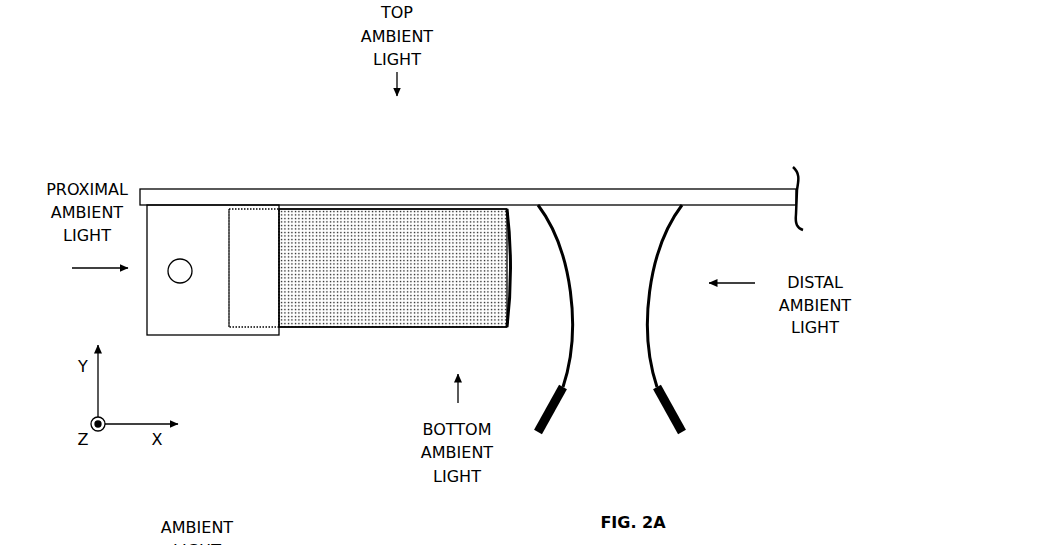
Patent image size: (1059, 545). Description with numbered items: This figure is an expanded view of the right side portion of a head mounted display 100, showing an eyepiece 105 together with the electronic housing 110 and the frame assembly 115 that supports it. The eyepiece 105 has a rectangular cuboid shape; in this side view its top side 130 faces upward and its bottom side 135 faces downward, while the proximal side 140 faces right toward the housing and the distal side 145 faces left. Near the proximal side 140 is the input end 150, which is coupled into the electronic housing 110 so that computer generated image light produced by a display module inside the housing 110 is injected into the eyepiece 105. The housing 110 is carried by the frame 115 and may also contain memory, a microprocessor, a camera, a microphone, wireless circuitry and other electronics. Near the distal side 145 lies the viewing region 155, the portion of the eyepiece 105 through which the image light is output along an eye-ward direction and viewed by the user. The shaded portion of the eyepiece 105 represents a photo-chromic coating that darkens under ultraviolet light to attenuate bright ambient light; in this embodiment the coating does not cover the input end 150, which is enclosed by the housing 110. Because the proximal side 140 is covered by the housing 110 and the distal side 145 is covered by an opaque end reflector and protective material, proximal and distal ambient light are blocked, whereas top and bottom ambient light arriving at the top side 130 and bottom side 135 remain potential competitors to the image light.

The head mounted display 100 is at (684, 80).
The eyepiece 105 is at (397, 267).
The electronic housing 110 is at (188, 326).
The frame assembly 115 is at (752, 189).
The top side 130 is at (356, 207).
The bottom side 135 is at (373, 329).
The proximal side 140 is at (228, 230).
The distal side 145 is at (541, 206).
The input end 150 is at (230, 183).
The viewing region 155 is at (363, 178).